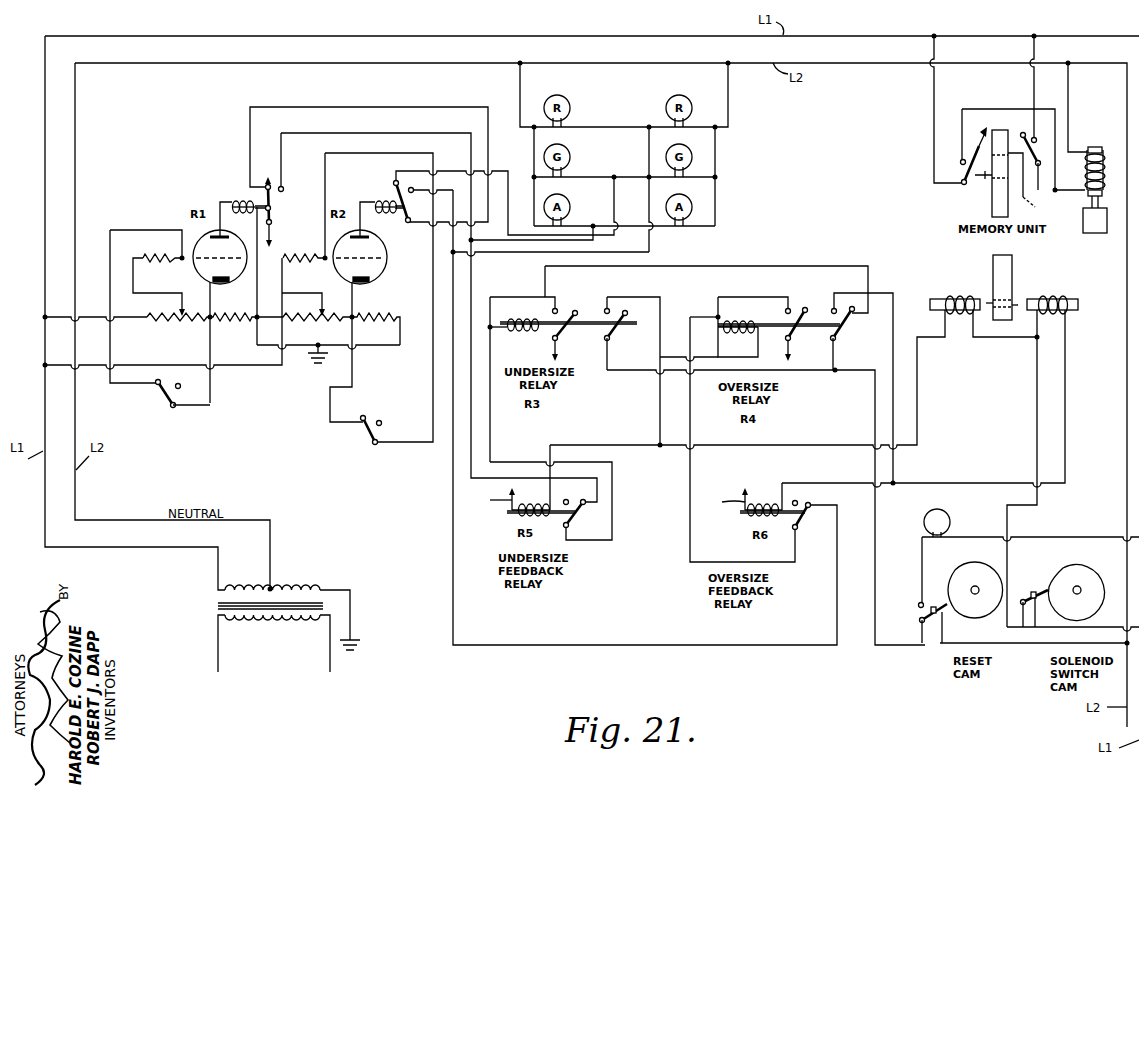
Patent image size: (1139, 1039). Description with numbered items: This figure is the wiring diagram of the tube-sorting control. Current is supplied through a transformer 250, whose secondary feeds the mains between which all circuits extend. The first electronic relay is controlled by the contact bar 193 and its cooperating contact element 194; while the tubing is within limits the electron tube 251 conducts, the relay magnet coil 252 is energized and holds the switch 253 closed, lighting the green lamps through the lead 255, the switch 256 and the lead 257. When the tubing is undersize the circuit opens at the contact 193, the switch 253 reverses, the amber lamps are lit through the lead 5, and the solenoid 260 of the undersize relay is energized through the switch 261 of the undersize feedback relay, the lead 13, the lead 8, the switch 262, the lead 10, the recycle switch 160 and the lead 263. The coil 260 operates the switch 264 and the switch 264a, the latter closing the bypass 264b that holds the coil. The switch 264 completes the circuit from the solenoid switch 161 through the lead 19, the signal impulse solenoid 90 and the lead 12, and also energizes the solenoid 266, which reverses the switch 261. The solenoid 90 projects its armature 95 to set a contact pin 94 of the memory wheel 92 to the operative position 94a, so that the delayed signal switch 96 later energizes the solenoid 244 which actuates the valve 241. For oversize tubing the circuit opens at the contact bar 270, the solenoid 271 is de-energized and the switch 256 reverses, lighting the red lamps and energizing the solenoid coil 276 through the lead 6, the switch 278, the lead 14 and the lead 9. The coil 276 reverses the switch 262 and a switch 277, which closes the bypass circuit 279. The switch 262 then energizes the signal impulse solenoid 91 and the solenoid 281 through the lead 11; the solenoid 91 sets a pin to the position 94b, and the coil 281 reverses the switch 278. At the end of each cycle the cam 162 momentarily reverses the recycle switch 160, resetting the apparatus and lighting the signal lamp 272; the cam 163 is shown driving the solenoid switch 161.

The lead 255 is at (380, 106).
The lead 5 is at (410, 132).
The lead 257 is at (490, 171).
The relay magnet coil 252 is at (240, 200).
The switch 253 is at (274, 209).
The solenoid 271 is at (378, 201).
The switch 256 is at (422, 196).
The electron tube 251 is at (200, 274).
The contact element 194 is at (157, 383).
The contact bar 193 is at (164, 398).
The contact bar 270 is at (370, 431).
The lead 6 is at (452, 458).
The lead 8 is at (736, 265).
The lead 13 is at (492, 435).
The solenoid 260 is at (535, 319).
The bypass 264b is at (520, 288).
The switch 264 is at (612, 310).
The switch 264a is at (612, 331).
The lead 10 is at (650, 368).
The lead 9 is at (690, 353).
The solenoid coil 276 is at (770, 321).
The bypass circuit 279 is at (766, 297).
The switch 277 is at (806, 306).
The switch 262 is at (846, 314).
The lead 12 is at (628, 445).
The lead 11 is at (893, 340).
The lead 19 is at (1037, 400).
The signal impulse solenoid 90 is at (965, 298).
The armature 95 is at (945, 300).
The signal impulse solenoid 91 is at (1070, 298).
The memory wheel 92 is at (1013, 270).
The contact pin 94 is at (991, 298).
The delayed signal switch 96 is at (986, 130).
The operative position 94a is at (1019, 173).
The operative position 94b is at (982, 182).
The solenoid 244 is at (1104, 150).
The valve 241 is at (1097, 235).
The lead 14 is at (690, 470).
The solenoid 266 is at (540, 498).
The switch 261 is at (575, 516).
The solenoid 281 is at (776, 503).
The switch 278 is at (809, 526).
The lead 263 is at (1020, 648).
The signal lamp 272 is at (949, 518).
The recycle switch 160 is at (933, 602).
The cam 162 is at (977, 571).
The solenoid switch 161 is at (1028, 594).
The solenoid switch cam 163 is at (1092, 560).
The transformer 250 is at (292, 624).